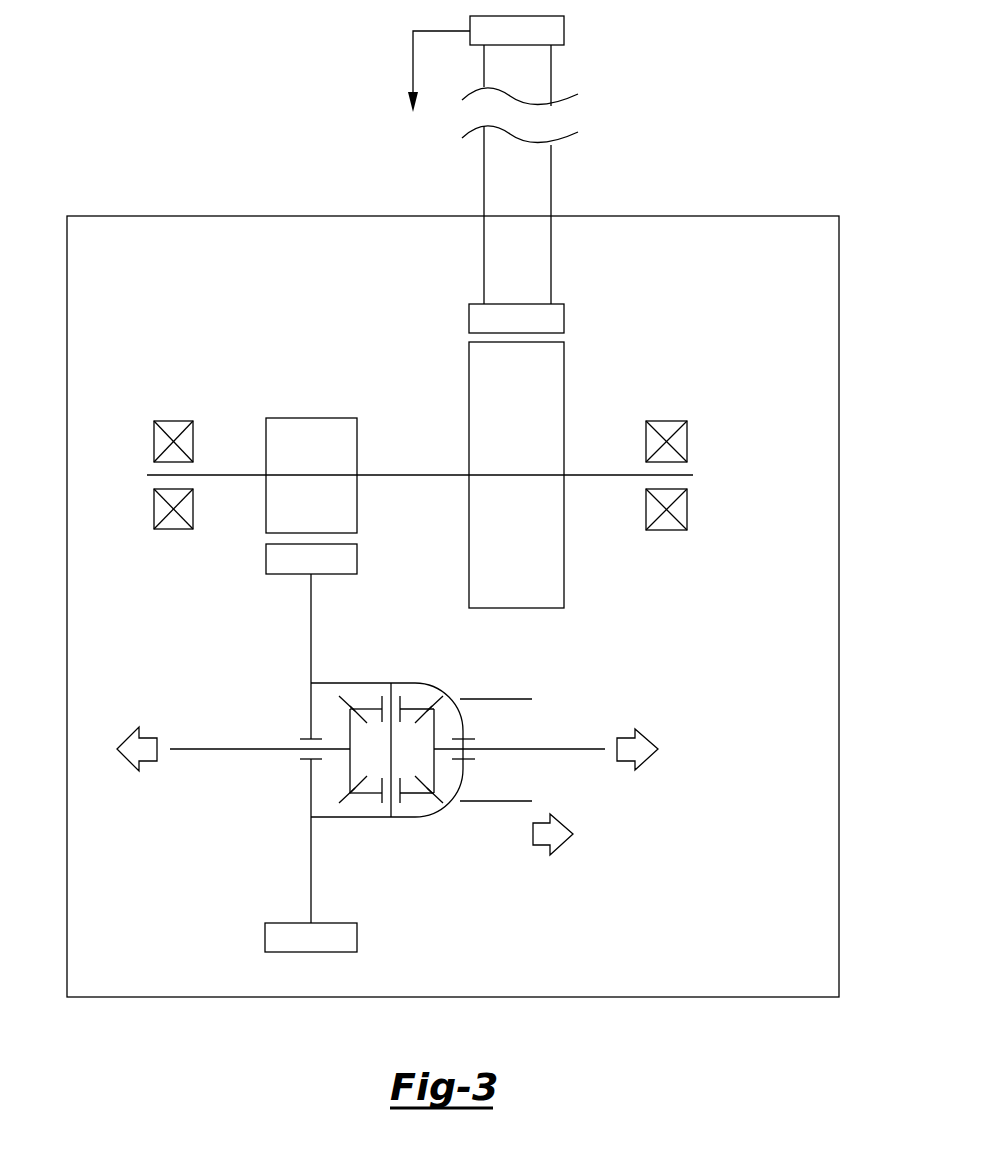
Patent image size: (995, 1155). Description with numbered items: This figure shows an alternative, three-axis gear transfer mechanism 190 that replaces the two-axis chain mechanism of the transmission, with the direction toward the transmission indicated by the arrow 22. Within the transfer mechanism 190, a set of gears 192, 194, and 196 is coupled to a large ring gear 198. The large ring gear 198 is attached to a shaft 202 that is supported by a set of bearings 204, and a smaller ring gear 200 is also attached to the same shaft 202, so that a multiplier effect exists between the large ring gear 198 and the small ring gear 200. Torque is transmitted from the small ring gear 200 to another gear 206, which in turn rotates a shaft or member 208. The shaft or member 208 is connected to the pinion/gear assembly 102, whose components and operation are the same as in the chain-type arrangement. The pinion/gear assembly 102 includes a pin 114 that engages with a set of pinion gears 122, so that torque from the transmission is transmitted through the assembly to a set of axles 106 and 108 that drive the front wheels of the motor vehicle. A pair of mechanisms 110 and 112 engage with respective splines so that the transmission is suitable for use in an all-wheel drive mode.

The direction arrow / vehicle reference 22 is at (413, 62).
The pinion/gear assembly 102 is at (421, 875).
The axle 106 is at (203, 752).
The axle 108 is at (585, 747).
The mechanism 110 is at (520, 698).
The mechanism 112 is at (520, 800).
The pin 114 is at (395, 691).
The pinion gears 122 is at (360, 800).
The three-axis gear transfer mechanism 190 is at (207, 1006).
The gear 192 is at (564, 31).
The gear 194 is at (564, 318).
The gear 196 is at (551, 253).
The large ring gear 198 is at (564, 392).
The small ring gear 200 is at (312, 417).
The shaft 202 is at (412, 477).
The bearings 204 is at (173, 530).
The gear 206 is at (281, 575).
The shaft or member 208 is at (312, 625).